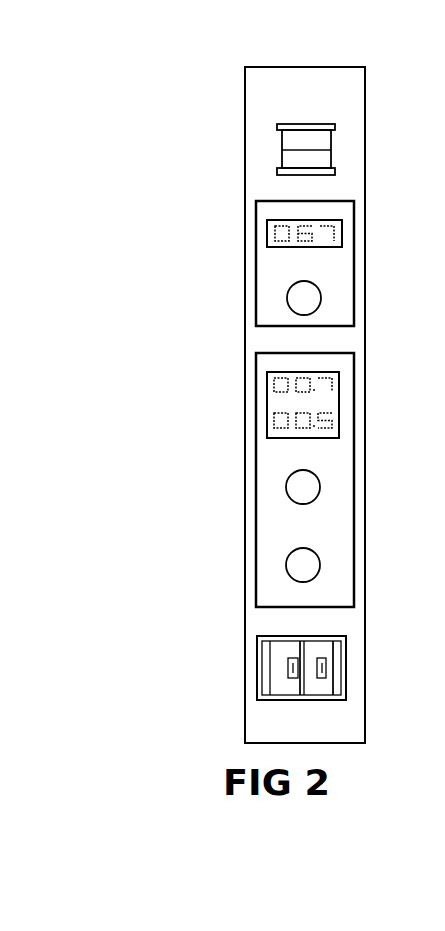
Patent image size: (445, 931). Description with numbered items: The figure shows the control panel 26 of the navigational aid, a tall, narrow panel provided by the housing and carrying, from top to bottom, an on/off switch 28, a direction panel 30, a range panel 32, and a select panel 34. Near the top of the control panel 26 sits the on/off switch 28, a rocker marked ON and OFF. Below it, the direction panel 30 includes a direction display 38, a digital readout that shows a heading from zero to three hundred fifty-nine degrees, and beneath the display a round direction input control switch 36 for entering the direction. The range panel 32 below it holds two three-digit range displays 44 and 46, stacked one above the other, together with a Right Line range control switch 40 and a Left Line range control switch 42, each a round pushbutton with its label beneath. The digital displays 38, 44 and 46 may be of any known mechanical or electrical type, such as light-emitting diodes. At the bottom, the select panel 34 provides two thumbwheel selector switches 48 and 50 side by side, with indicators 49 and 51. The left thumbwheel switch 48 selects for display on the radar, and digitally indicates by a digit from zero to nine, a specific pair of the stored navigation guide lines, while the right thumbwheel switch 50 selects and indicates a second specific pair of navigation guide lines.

The control panel 26 is at (258, 79).
The on/off switch 28 is at (280, 138).
The direction panel 30 is at (302, 261).
The range panel 32 is at (304, 480).
The select panel 34 is at (296, 670).
The direction input control switch 36 is at (316, 297).
The direction display 38 is at (340, 224).
The Right Line range control switch 40 is at (312, 486).
The Left Line range control switch 42 is at (312, 564).
The three-digit range display 44 is at (337, 375).
The three-digit range display 46 is at (337, 417).
The left thumbwheel selector switch 48 is at (295, 646).
The indicator 49 is at (290, 672).
The right thumbwheel selector switch 50 is at (326, 648).
The indicator 51 is at (316, 678).